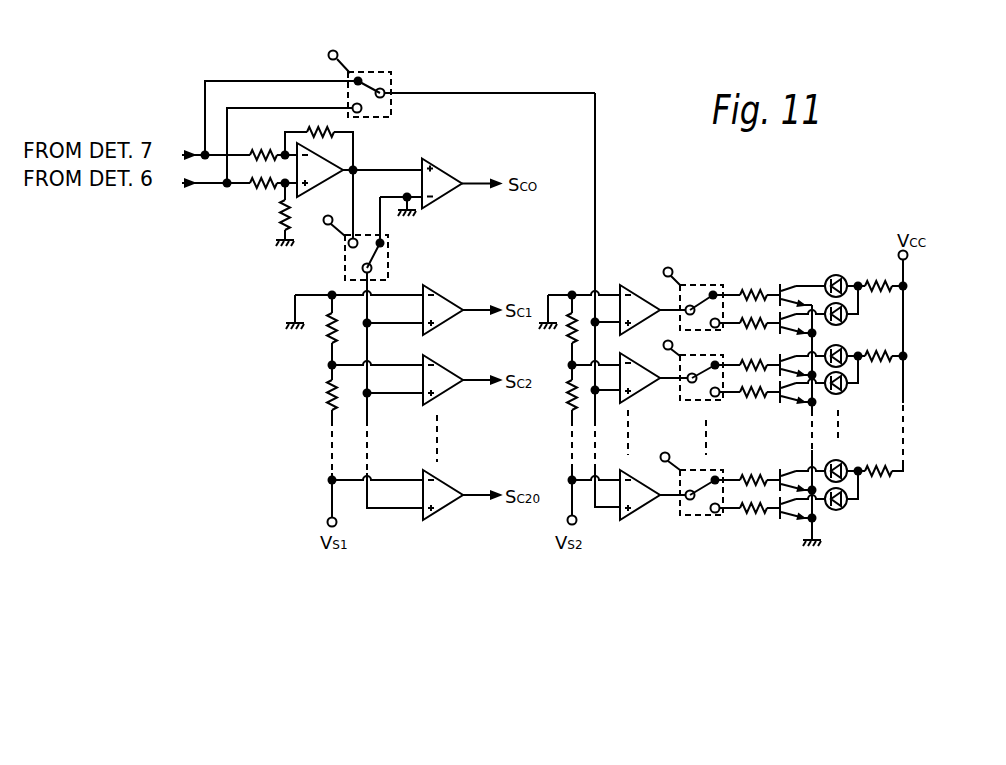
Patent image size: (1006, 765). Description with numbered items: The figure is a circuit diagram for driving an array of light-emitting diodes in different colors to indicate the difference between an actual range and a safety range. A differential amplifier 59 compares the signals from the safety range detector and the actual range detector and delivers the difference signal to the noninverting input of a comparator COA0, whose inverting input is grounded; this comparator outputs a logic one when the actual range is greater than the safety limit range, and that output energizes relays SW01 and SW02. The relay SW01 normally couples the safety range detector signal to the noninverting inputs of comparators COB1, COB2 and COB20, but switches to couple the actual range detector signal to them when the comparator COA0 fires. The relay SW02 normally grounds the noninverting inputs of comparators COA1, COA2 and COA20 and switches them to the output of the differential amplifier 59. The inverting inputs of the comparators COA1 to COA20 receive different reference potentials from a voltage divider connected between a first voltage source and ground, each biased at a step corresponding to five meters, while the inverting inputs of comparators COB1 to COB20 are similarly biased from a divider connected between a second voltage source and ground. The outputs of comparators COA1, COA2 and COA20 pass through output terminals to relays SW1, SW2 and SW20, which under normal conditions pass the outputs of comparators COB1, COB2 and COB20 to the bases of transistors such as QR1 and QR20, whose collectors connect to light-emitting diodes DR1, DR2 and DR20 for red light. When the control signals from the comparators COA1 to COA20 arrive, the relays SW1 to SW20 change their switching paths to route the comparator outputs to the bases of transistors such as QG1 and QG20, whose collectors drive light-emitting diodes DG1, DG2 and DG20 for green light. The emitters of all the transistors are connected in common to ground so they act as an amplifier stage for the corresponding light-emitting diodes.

The differential amplifier 59 is at (333, 167).
The relay SW01 is at (391, 72).
The relay SW02 is at (389, 258).
The comparator COA0 is at (451, 174).
The comparator COA1 is at (450, 302).
The comparator COA2 is at (450, 371).
The comparator COA20 is at (450, 486).
The comparator COB1 is at (633, 293).
The comparator COB2 is at (640, 391).
The comparator COB20 is at (638, 509).
The relay SW1 is at (712, 285).
The relay SW2 is at (723, 402).
The relay SW20 is at (710, 518).
The transistor QR1 is at (779, 291).
The transistor QG1 is at (775, 327).
The transistor QR20 is at (790, 467).
The transistor QG20 is at (785, 519).
The light-emitting diode DR1 is at (837, 275).
The light-emitting diode DG1 is at (847, 321).
The light-emitting diode DR2 is at (845, 347).
The light-emitting diode DG2 is at (845, 390).
The light-emitting diode DR20 is at (845, 462).
The light-emitting diode DG20 is at (845, 509).